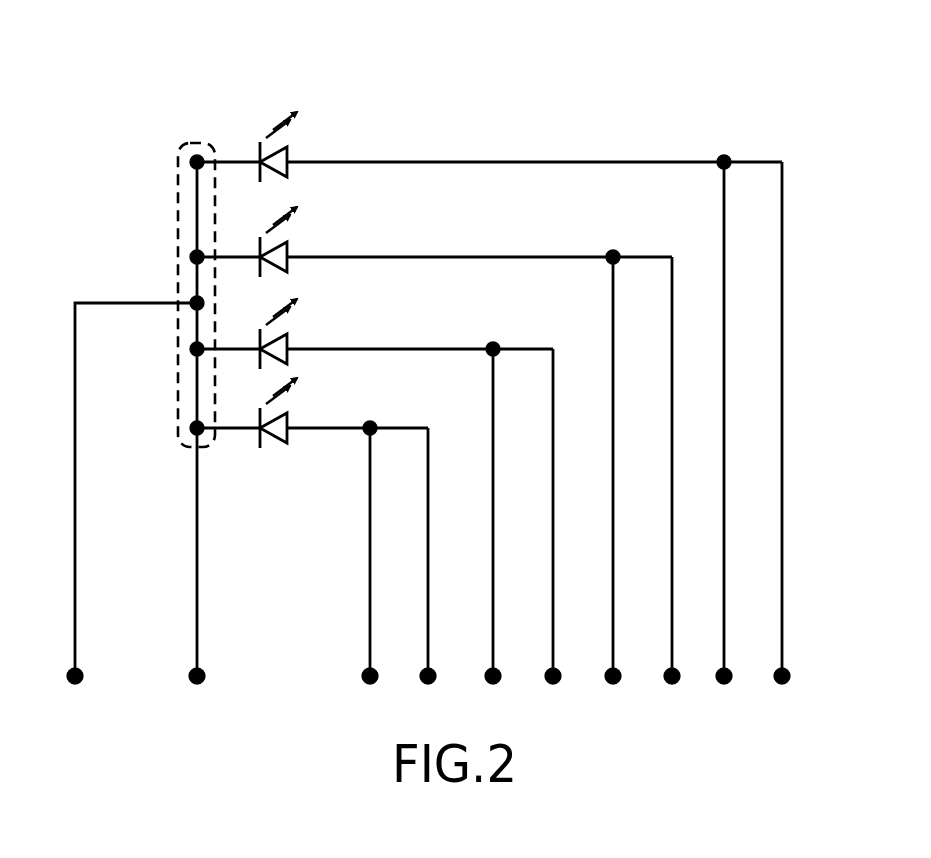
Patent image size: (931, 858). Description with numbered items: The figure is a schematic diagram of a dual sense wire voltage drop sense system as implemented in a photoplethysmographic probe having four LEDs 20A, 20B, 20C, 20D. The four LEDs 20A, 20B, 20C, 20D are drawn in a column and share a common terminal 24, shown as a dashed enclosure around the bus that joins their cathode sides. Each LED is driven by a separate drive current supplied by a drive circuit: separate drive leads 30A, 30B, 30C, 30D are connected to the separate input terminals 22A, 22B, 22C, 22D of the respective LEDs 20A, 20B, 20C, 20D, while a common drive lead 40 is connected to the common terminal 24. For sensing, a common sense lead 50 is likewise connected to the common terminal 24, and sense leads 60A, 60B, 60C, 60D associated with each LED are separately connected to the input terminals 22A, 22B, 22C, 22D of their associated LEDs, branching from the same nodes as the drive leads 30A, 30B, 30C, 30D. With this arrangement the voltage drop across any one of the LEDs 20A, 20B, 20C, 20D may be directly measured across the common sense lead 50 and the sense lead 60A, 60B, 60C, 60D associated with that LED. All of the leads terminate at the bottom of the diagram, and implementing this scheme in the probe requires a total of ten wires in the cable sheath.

The common terminal 24 is at (178, 218).
The LED 20A is at (291, 433).
The LED 20B is at (289, 355).
The LED 20C is at (289, 263).
The LED 20D is at (289, 168).
The input terminal 22A is at (372, 426).
The input terminal 22B is at (493, 345).
The input terminal 22C is at (613, 254).
The input terminal 22D is at (724, 160).
The drive lead 30A is at (428, 528).
The drive lead 30B is at (553, 525).
The drive lead 30C is at (672, 525).
The drive lead 30D is at (782, 455).
The common drive lead 40 is at (197, 530).
The common sense lead 50 is at (75, 510).
The sense lead 60A is at (370, 600).
The sense lead 60B is at (493, 553).
The sense lead 60C is at (613, 553).
The sense lead 60D is at (724, 553).